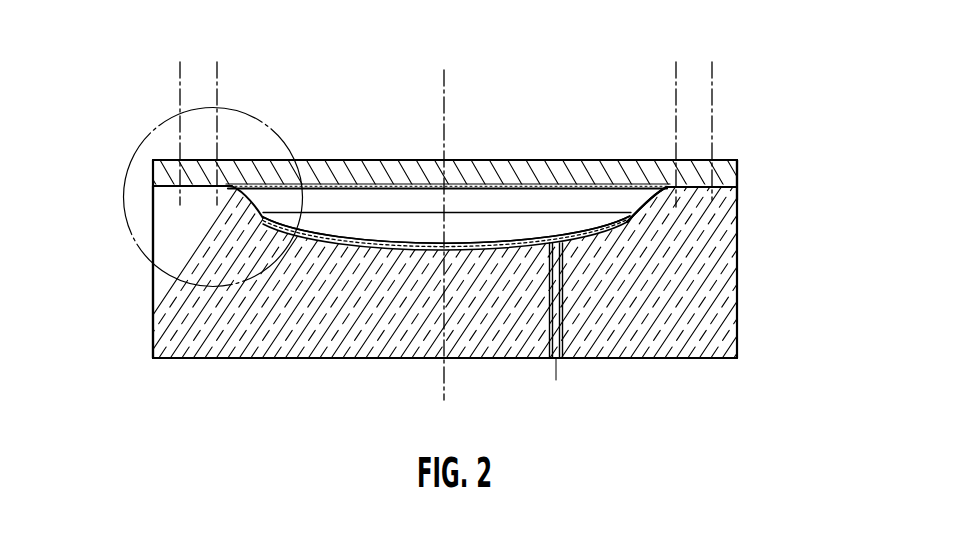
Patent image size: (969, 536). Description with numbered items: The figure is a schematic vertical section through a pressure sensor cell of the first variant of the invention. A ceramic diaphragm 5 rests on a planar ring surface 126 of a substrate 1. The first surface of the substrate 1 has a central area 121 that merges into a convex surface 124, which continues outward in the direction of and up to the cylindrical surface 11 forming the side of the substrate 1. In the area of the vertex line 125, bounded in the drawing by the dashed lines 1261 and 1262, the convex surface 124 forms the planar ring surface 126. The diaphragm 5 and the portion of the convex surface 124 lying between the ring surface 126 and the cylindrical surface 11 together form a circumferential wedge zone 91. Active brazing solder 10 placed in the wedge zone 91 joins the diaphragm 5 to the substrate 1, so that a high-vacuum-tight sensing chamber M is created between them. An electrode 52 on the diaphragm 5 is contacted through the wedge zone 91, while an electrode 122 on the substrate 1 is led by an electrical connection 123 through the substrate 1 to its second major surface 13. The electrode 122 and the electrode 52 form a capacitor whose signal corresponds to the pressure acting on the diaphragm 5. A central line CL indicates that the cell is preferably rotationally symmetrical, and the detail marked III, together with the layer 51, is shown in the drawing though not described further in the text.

The substrate 1 is at (276, 375).
The active brazing solder 10 is at (152, 191).
The cylindrical surface 11 is at (152, 330).
The second major surface 13 is at (415, 366).
The central area 121 is at (458, 249).
The electrode 122 is at (357, 250).
The electrical connection 123 is at (556, 337).
The convex surface 124 is at (649, 158).
The vertex line 125 is at (197, 182).
The ring surface 126 is at (702, 193).
The dashed line 1261 is at (180, 77).
The dashed line 1262 is at (217, 76).
The ceramic diaphragm 5 is at (727, 158).
The first layer 51 is at (428, 188).
The electrode 52 is at (506, 186).
The wedge zone 91 is at (740, 183).
The sensing chamber M is at (356, 202).
The central line CL is at (446, 100).
The detail III is at (256, 118).